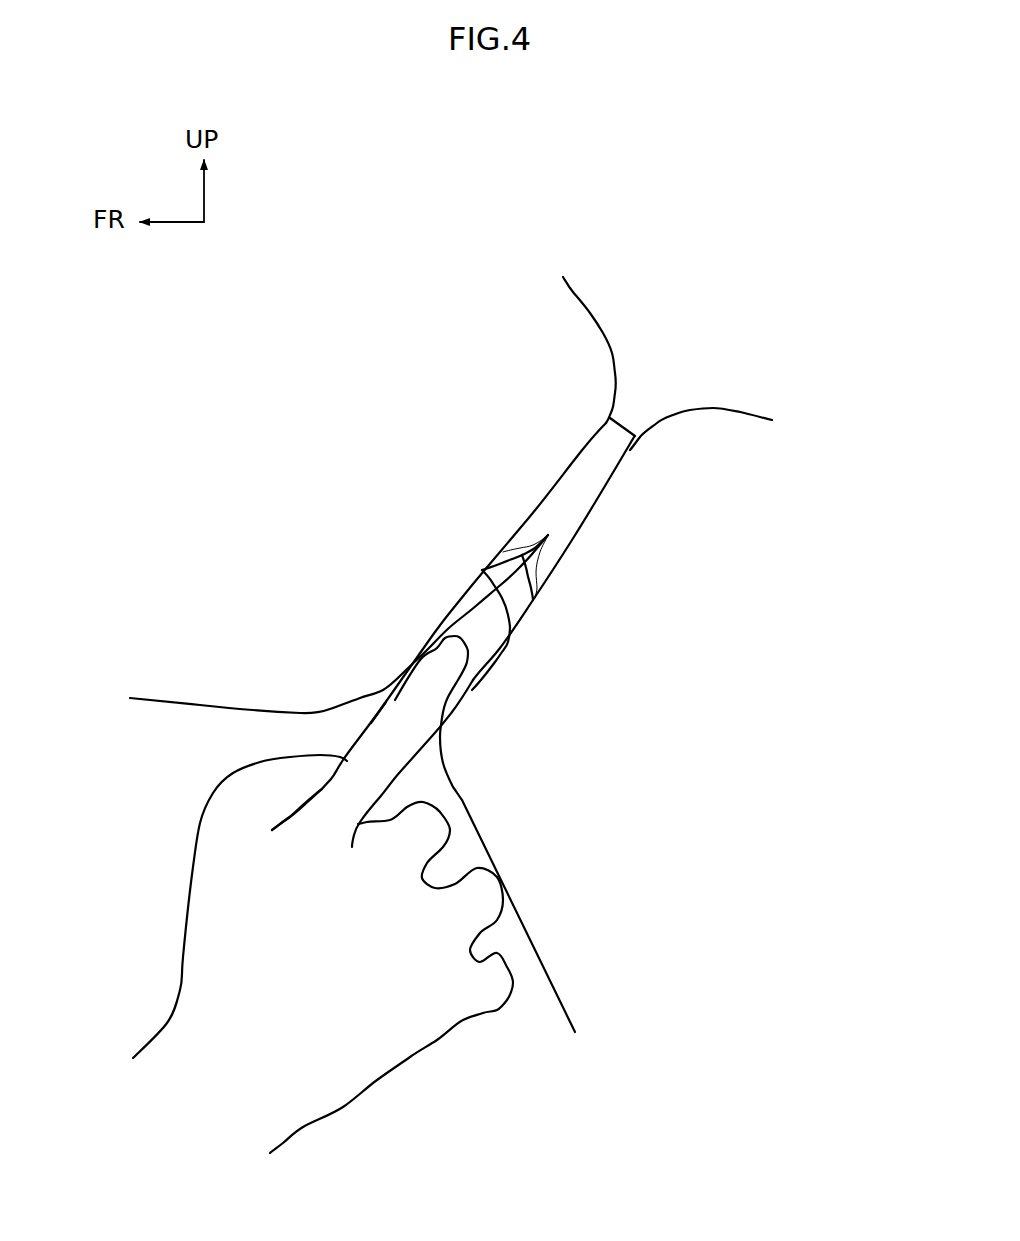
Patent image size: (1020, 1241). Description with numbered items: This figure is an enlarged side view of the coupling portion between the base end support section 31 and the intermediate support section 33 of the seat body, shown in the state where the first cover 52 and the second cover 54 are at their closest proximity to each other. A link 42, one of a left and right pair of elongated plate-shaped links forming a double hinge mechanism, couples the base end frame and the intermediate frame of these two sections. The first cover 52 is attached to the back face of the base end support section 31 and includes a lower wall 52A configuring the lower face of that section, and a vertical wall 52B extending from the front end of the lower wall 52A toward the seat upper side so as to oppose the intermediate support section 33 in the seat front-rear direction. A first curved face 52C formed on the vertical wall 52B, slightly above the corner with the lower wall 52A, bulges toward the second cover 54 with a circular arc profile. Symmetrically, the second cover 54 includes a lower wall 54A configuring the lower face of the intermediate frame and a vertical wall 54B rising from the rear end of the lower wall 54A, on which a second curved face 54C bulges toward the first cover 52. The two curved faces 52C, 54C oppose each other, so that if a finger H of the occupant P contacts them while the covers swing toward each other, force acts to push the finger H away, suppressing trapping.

The base end support section 31 is at (736, 402).
The intermediate support section 33 is at (592, 310).
The link 42 is at (626, 424).
The first cover 52 is at (453, 764).
The lower wall 52A is at (525, 935).
The vertical wall 52B is at (457, 706).
The first curved face 52C is at (483, 573).
The second cover 54 is at (360, 691).
The lower wall 54A is at (243, 712).
The vertical wall 54B is at (450, 723).
The second curved face 54C is at (506, 650).
The finger H is at (377, 715).
The occupant P is at (182, 958).